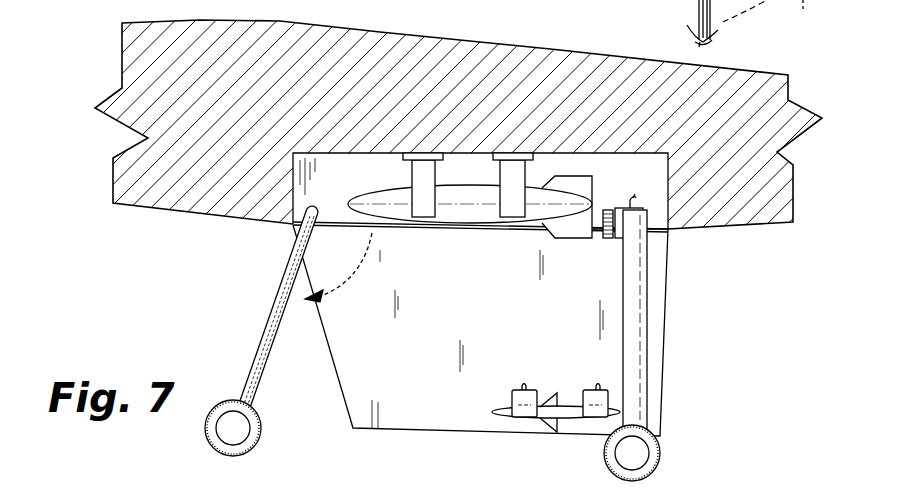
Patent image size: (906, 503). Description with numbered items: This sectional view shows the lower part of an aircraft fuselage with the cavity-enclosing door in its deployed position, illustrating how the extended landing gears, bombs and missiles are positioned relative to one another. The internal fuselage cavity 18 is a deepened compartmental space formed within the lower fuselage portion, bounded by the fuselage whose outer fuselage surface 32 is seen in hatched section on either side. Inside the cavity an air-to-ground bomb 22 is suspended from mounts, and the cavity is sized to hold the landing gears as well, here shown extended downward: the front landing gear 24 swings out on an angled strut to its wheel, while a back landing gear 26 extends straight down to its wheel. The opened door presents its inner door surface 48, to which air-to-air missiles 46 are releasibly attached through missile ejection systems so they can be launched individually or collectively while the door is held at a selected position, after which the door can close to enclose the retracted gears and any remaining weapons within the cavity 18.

The internal fuselage cavity 18 is at (627, 167).
The air-to-ground bombs 22 is at (460, 215).
The front landing gear 24 is at (258, 437).
The back landing gears 26 is at (658, 460).
The outer fuselage surface 32 is at (180, 213).
The air-to-air missiles 46 is at (572, 418).
The inner door surface 48 is at (425, 415).